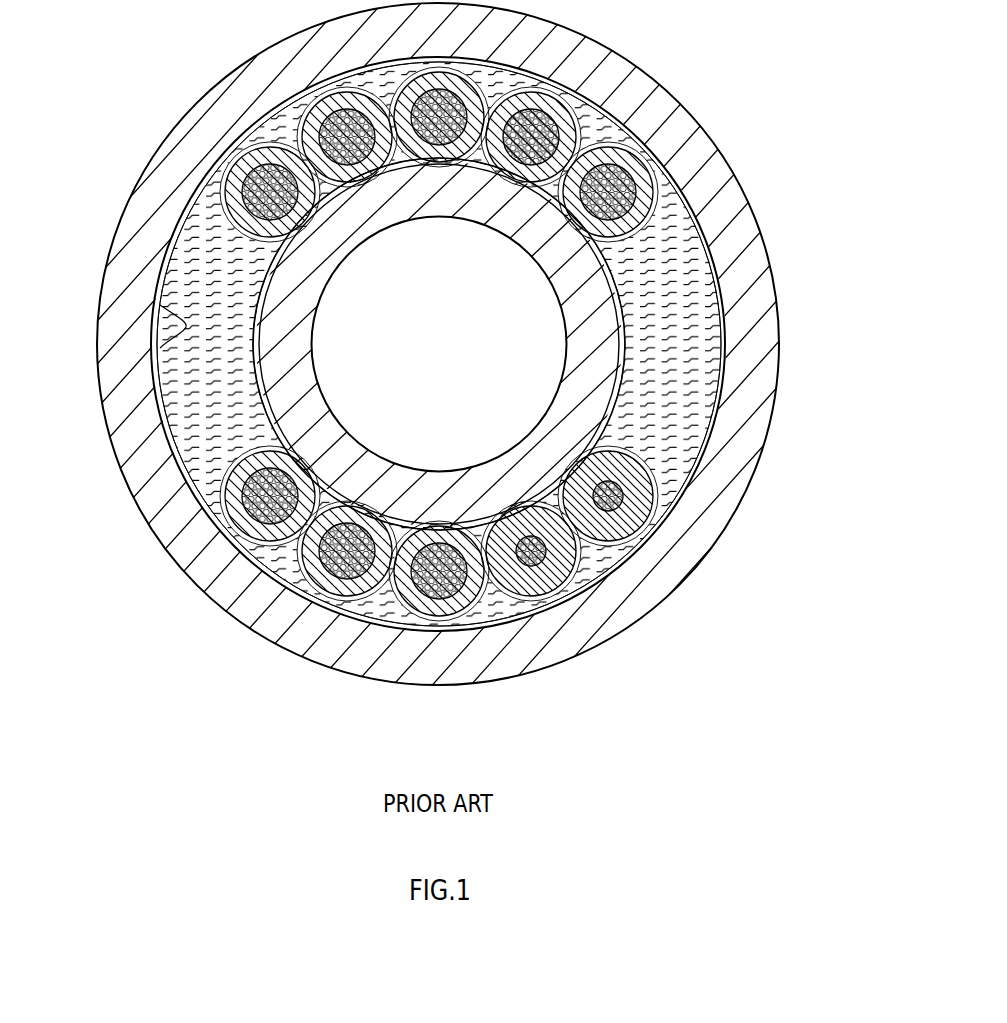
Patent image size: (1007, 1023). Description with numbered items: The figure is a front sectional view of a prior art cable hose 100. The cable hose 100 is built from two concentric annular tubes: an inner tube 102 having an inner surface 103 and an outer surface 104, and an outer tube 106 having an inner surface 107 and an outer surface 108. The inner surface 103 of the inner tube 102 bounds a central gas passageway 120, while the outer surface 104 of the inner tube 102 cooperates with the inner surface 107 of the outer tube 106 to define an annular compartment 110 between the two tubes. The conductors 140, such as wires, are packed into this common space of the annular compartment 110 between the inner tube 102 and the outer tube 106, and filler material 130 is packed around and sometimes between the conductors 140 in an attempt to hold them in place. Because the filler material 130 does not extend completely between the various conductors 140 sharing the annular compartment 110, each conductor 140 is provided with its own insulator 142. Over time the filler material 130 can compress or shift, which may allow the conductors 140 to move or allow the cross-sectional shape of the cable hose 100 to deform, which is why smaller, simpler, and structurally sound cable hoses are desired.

The cable hose 100 is at (448, 511).
The inner tube 102 is at (602, 258).
The inner surface 103 is at (528, 431).
The outer surface 104 is at (624, 287).
The outer tube 106 is at (117, 452).
The inner surface 107 is at (154, 342).
The outer surface 108 is at (145, 518).
The annular compartment 110 is at (626, 311).
The gas passageway 120 is at (455, 350).
The filler material 130 is at (277, 127).
The conductor 140 is at (247, 185).
The insulator 142 is at (215, 148).